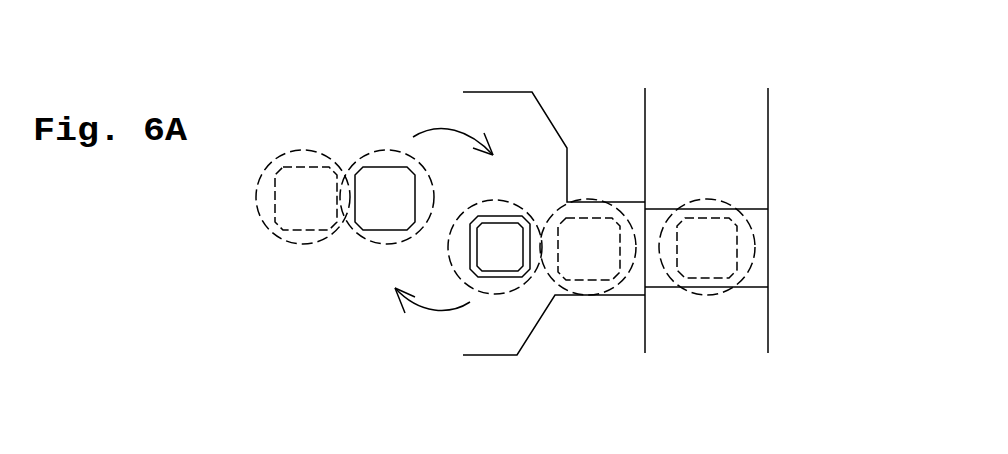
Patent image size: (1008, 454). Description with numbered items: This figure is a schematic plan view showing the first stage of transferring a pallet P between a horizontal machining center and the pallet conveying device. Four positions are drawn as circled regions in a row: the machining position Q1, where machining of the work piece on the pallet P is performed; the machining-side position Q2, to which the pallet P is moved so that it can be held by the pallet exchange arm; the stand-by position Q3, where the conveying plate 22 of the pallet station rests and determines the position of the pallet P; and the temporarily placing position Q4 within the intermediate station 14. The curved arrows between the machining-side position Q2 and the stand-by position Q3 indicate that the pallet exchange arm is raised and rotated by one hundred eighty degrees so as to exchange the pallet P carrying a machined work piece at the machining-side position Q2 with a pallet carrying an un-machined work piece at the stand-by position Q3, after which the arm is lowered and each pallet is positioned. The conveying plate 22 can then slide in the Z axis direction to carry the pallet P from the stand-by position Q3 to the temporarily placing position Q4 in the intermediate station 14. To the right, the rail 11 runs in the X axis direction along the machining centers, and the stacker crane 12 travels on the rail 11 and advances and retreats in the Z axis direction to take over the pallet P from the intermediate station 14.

The pallet P is at (370, 167).
The machining position Q1 is at (292, 245).
The machining-side position Q2 is at (402, 152).
The stand-by position Q3 is at (497, 295).
The temporarily placing position Q4 is at (622, 287).
The conveying plate 22 is at (513, 240).
The intermediate station 14 is at (565, 297).
The rail 11 is at (735, 112).
The stacker crane 12 is at (760, 228).